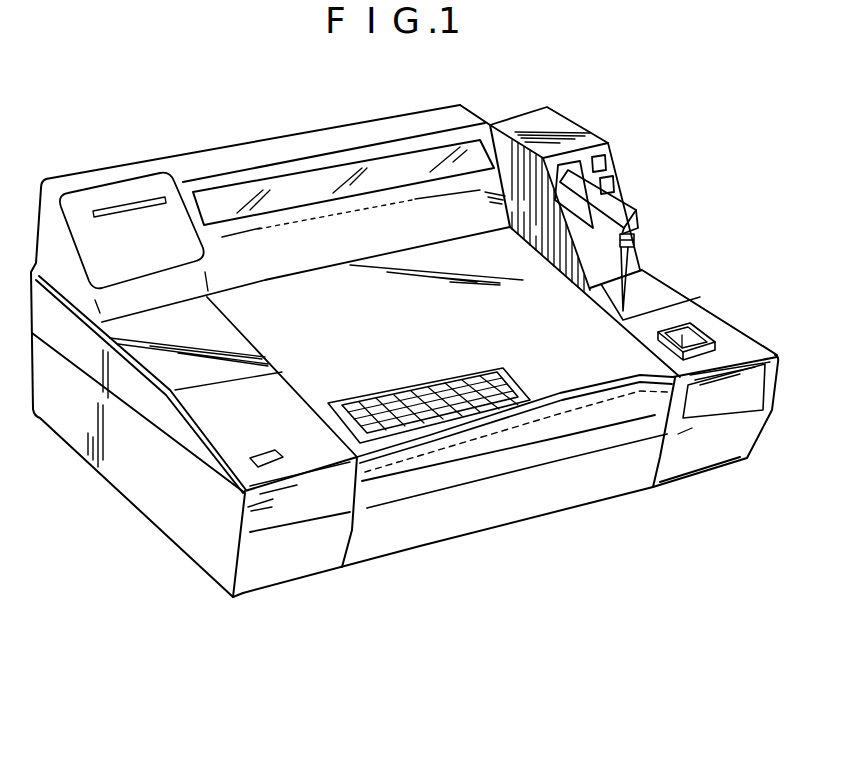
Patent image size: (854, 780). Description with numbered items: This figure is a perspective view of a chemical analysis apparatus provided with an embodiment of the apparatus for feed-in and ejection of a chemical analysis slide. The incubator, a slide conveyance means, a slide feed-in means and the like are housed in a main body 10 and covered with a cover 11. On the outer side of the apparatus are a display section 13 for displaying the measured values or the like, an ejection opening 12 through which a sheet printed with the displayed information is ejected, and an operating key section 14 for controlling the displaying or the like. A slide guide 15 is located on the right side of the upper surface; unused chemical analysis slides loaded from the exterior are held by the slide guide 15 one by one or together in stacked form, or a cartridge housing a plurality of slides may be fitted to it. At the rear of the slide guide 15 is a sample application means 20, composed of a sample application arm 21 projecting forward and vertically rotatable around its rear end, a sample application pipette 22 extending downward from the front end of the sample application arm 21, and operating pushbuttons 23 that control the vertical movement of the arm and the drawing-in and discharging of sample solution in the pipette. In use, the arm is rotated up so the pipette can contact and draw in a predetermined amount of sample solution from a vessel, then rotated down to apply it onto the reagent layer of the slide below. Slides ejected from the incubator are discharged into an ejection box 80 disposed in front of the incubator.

The main body 10 is at (167, 518).
The cover 11 is at (418, 334).
The ejection opening 12 is at (133, 202).
The display section 13 is at (330, 175).
The operating key section 14 is at (483, 373).
The slide guide 15 is at (708, 334).
The sample application means 20 is at (655, 195).
The sample application arm 21 is at (641, 214).
The sample application pipette 22 is at (632, 256).
The operating pushbuttons 23 is at (618, 180).
The ejection box 80 is at (547, 488).